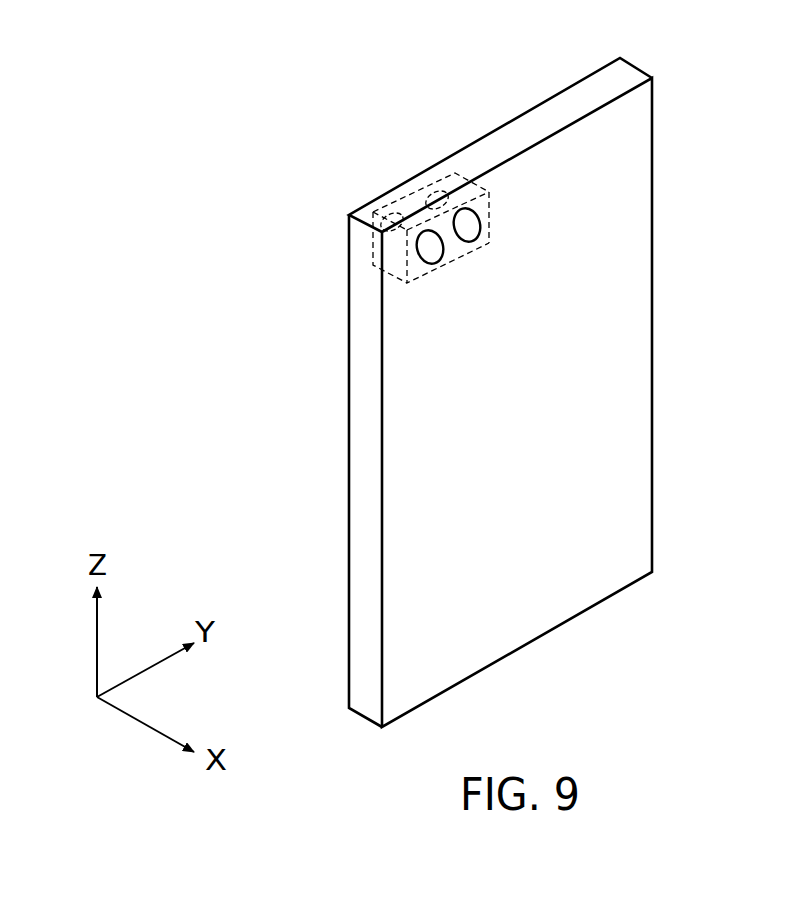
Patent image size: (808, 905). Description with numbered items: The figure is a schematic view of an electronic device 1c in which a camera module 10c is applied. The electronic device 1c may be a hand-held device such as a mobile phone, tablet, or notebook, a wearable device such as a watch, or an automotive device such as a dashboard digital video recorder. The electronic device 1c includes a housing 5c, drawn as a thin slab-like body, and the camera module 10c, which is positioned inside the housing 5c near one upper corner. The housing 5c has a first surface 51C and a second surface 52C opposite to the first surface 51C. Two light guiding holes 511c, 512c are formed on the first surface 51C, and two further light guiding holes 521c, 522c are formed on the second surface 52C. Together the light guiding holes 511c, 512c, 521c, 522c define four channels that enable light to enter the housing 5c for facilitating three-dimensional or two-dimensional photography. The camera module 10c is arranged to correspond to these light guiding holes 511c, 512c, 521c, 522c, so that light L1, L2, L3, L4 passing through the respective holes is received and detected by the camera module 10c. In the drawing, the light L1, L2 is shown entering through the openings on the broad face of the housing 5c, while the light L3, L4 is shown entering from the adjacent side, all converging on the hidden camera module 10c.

The electronic device 1c is at (260, 112).
The housing 5c is at (350, 460).
The first surface 51C is at (622, 353).
The second surface 52C is at (623, 193).
The camera module 10c is at (468, 176).
The light guiding hole 511c is at (400, 283).
The light guiding hole 512c is at (488, 213).
The light guiding hole 521c is at (400, 248).
The light guiding hole 522c is at (445, 191).
The light L1 is at (434, 249).
The light L2 is at (471, 228).
The light L3 is at (391, 224).
The light L4 is at (429, 202).